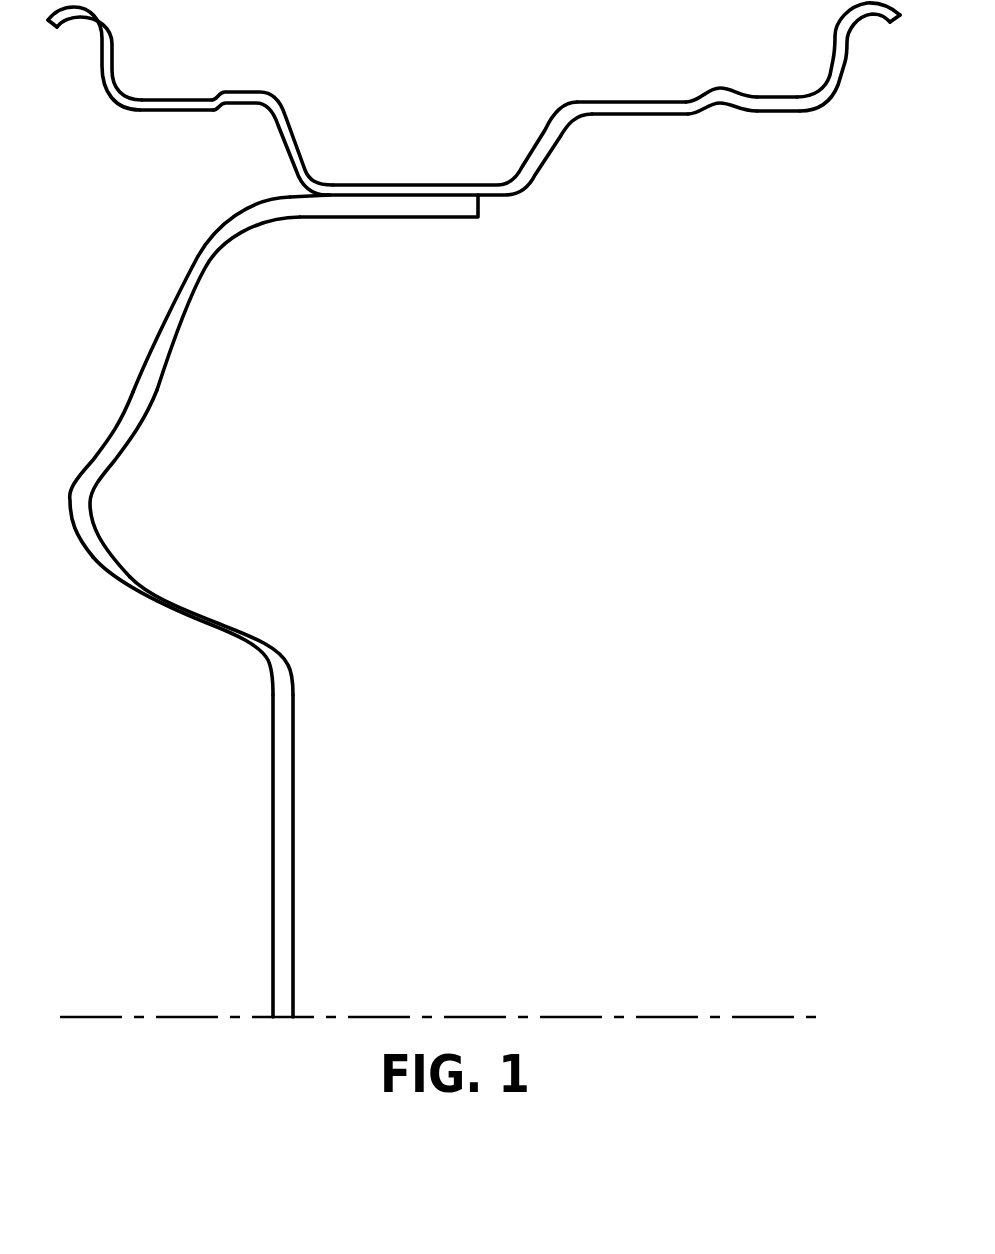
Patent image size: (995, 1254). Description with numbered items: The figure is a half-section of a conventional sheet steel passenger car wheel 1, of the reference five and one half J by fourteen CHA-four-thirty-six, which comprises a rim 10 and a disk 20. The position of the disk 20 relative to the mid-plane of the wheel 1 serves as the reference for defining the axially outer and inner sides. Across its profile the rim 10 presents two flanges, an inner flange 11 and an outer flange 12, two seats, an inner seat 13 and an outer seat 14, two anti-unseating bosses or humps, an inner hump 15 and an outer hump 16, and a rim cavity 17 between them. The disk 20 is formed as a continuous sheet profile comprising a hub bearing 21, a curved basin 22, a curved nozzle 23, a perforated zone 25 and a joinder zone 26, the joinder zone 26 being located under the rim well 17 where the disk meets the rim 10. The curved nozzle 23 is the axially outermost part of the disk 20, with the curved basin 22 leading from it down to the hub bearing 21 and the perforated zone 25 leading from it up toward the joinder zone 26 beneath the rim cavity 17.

The wheel 1 is at (474, 510).
The rim 10 is at (474, 119).
The inner flange 11 is at (842, 38).
The outer flange 12 is at (112, 47).
The inner seat 13 is at (783, 103).
The outer seat 14 is at (168, 108).
The inner hump 15 is at (717, 88).
The outer hump 16 is at (243, 93).
The rim cavity 17 is at (412, 190).
The disk 20 is at (274, 606).
The hub bearing 21 is at (284, 862).
The curved basin 22 is at (168, 610).
The curved nozzle 23 is at (83, 507).
The perforated zone 25 is at (162, 347).
The joinder zone 26 is at (357, 207).